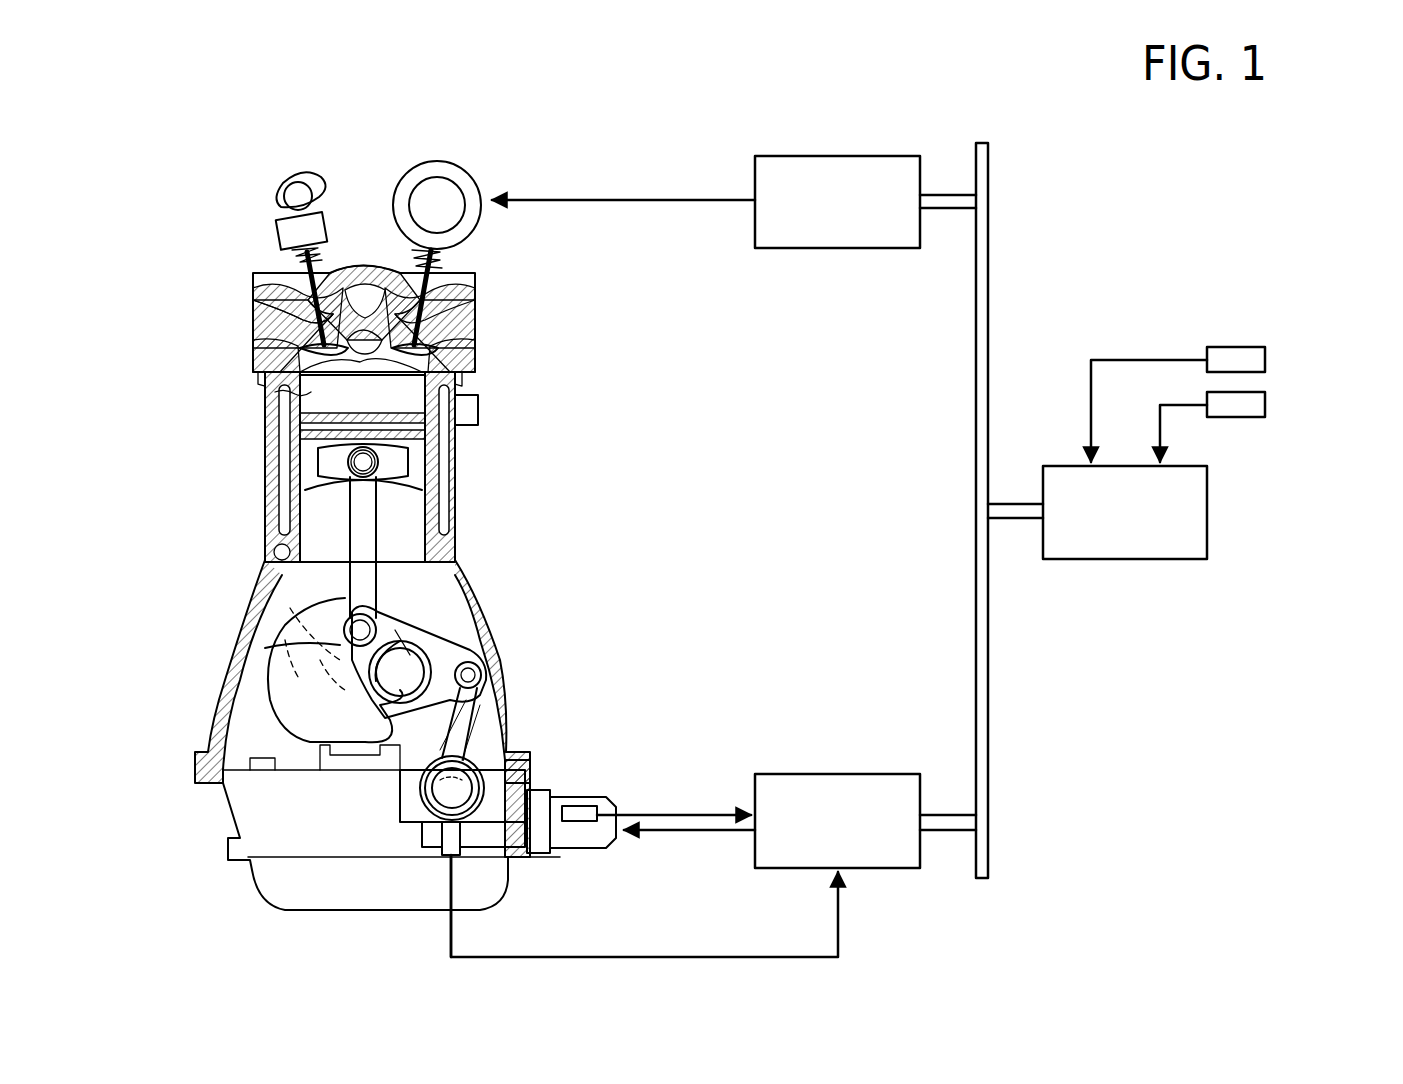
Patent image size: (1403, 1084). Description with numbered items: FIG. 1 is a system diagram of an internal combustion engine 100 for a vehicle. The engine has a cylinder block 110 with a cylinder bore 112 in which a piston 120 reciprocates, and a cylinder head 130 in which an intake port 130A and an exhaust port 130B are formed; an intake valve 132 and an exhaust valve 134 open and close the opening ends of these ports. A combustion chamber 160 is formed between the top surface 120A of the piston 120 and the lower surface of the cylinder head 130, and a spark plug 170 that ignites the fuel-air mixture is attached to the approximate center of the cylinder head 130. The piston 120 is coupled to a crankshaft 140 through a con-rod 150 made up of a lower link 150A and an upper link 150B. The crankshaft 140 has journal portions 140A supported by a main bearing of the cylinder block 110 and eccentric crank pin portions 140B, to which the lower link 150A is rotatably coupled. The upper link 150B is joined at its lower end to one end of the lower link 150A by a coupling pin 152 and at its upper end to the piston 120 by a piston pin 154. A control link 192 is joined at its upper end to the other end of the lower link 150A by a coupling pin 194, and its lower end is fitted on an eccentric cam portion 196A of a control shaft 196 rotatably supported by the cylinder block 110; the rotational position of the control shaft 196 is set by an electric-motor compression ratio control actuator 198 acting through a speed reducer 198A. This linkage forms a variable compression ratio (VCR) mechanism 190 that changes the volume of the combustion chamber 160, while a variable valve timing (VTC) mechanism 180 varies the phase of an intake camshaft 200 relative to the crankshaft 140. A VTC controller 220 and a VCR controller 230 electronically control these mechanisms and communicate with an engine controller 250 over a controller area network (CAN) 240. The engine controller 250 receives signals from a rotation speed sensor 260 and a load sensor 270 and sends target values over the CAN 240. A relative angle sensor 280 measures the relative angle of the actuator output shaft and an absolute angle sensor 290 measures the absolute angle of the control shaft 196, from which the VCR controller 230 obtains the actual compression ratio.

The internal combustion engine 100 is at (201, 179).
The cylinder block 110 is at (478, 598).
The cylinder bore 112 is at (271, 521).
The piston 120 is at (418, 468).
The top surface 120A is at (458, 421).
The cylinder head 130 is at (468, 348).
The intake port 130A is at (468, 298).
The exhaust port 130B is at (258, 328).
The intake valve 132 is at (468, 323).
The exhaust valve 134 is at (258, 303).
The crankshaft 140 is at (254, 660).
The journal portions 140A is at (262, 691).
The crank pin portions 140B is at (476, 654).
The con-rod (connecting rod) 150 is at (380, 526).
The lower link 150A is at (444, 596).
The upper link 150B is at (368, 604).
The coupling pin 152 is at (264, 644).
The piston pin 154 is at (298, 464).
The combustion chamber 160 is at (276, 400).
The spark plug 170 is at (276, 372).
The variable valve timing (VTC) mechanism 180 is at (453, 162).
The variable compression ratio (VCR) mechanism 190 is at (456, 634).
The control link 192 is at (486, 712).
The coupling pin 194 is at (486, 676).
The control shaft 196 is at (530, 764).
The eccentric cam portion 196A is at (542, 794).
The compression ratio control actuator 198 is at (576, 846).
The speed reducer 198A is at (466, 845).
The intake camshaft 200 is at (446, 214).
The VTC controller 220 is at (830, 156).
The VCR controller 230 is at (830, 774).
The controller area network (CAN) 240 is at (988, 673).
The engine controller 250 is at (1214, 492).
The rotation speed sensor 260 is at (1270, 356).
The load sensor 270 is at (1270, 402).
The relative angle sensor 280 is at (616, 800).
The absolute angle sensor 290 is at (442, 860).